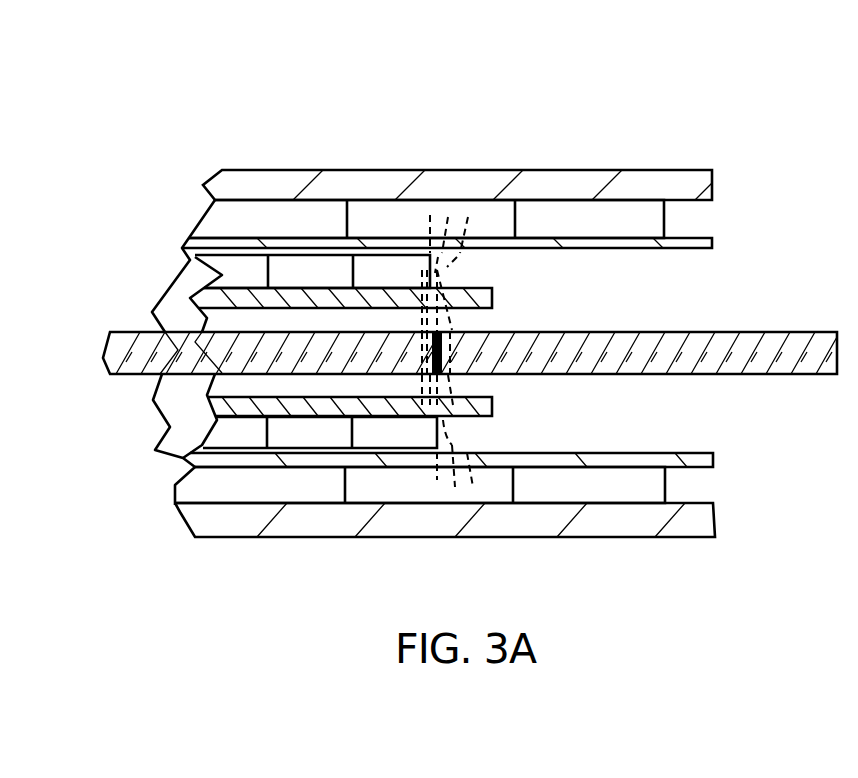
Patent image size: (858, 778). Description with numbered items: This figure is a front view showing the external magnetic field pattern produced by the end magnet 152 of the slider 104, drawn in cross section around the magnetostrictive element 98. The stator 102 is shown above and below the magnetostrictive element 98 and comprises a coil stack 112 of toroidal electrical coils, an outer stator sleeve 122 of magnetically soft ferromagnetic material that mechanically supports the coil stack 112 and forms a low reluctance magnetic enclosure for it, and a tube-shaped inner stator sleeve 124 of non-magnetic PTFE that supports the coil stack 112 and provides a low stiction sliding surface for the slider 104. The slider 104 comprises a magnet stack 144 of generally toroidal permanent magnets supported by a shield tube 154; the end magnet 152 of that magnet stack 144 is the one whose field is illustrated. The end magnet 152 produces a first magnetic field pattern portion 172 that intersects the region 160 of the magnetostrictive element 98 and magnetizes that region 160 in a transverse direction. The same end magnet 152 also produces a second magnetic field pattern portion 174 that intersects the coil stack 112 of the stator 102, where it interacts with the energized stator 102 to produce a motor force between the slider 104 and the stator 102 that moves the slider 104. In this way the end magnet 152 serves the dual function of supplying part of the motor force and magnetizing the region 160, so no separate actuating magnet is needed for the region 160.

The magnetostrictive element 98 is at (742, 375).
The stator 102 is at (720, 480).
The slider 104 is at (507, 418).
The coil stack 112 is at (205, 210).
The outer stator sleeve 122 is at (213, 175).
The inner stator sleeve 124 is at (180, 248).
The magnet stack 144 is at (198, 432).
The end magnet 152 is at (393, 257).
The shield tube 154 is at (205, 403).
The region 160 is at (430, 345).
The first magnetic field pattern portion 172 is at (457, 317).
The second magnetic field pattern portion 174 is at (457, 260).